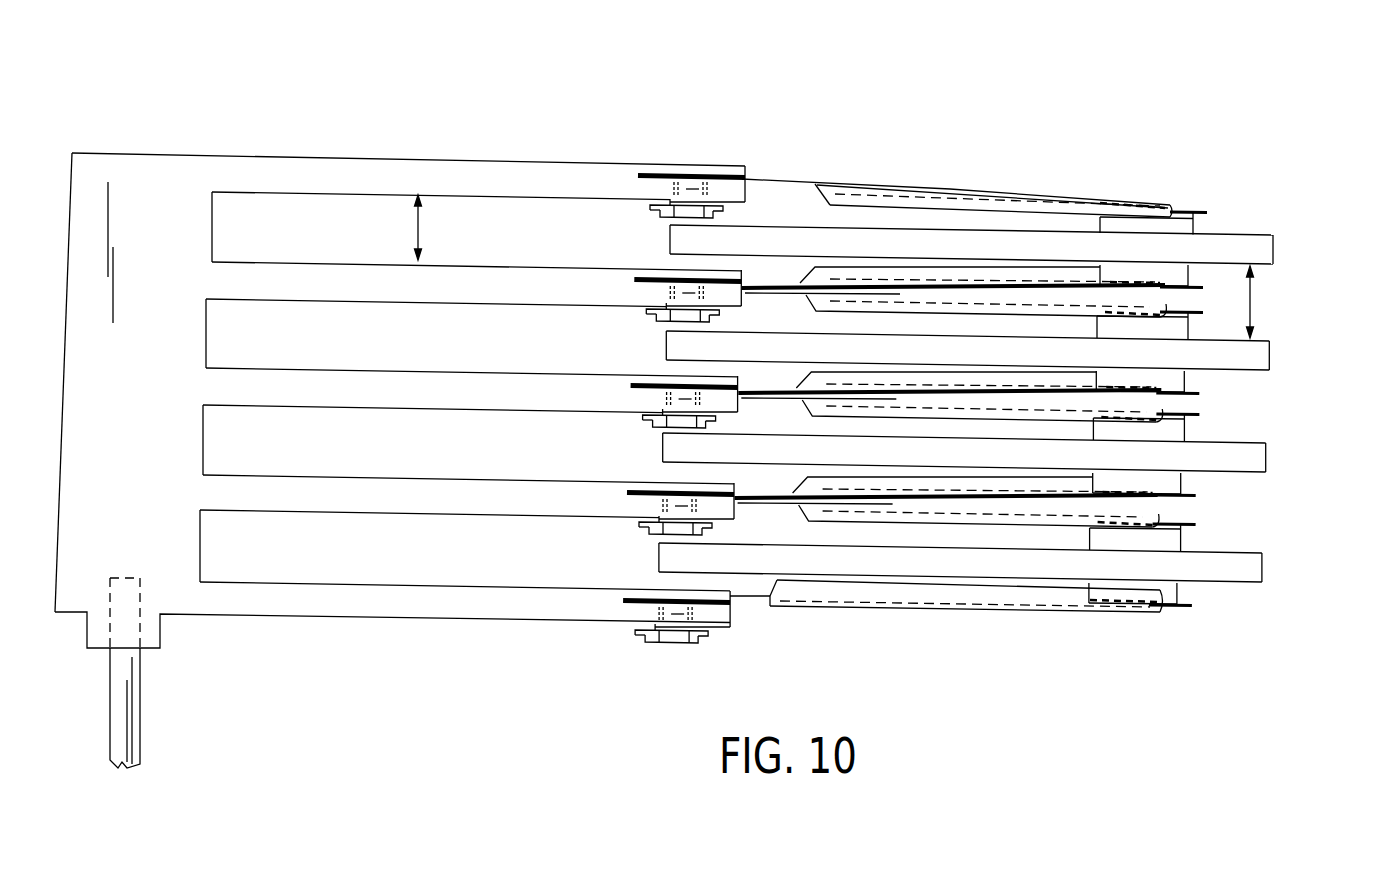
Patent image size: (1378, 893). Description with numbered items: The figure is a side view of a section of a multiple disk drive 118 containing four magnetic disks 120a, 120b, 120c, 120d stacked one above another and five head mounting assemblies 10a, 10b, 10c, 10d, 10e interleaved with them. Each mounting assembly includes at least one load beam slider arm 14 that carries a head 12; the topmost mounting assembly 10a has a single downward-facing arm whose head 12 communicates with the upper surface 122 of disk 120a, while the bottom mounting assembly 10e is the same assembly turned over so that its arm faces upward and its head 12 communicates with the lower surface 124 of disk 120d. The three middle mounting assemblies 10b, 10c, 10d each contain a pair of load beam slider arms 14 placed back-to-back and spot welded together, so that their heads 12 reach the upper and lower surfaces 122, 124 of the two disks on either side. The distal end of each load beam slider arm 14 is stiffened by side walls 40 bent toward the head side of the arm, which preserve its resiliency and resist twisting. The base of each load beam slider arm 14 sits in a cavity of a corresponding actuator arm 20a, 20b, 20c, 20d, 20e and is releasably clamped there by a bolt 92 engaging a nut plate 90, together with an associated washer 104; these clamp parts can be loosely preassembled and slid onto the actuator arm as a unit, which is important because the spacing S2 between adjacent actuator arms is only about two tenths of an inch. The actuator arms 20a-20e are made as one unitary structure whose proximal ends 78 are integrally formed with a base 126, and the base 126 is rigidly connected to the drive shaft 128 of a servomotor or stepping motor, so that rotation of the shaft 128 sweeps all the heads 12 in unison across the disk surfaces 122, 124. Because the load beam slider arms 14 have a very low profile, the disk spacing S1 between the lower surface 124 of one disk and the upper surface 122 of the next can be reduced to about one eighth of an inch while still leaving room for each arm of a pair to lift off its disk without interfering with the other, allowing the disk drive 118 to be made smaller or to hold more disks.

The multiple disk drive 118 is at (484, 68).
The base 126 is at (86, 152).
The proximal ends 78 is at (207, 134).
The drive shaft 128 is at (140, 708).
The actuator arm 20a is at (335, 140).
The actuator arm 20b is at (329, 249).
The actuator arm 20c is at (332, 354).
The actuator arm 20d is at (332, 454).
The actuator arm 20e is at (327, 569).
The spacing between adjacent actuator arms S2 is at (433, 227).
The disk spacing S1 is at (1262, 302).
The nut plate 90 is at (745, 168).
The mounting assembly 10a is at (624, 134).
The mounting assembly 10b is at (582, 249).
The mounting assembly 10c is at (573, 354).
The mounting assembly 10d is at (563, 458).
The mounting assembly 10e is at (574, 572).
The washer 104 is at (650, 207).
The bolt 92 is at (660, 214).
The side walls 40 is at (826, 192).
The load beam slider arm 14 is at (1118, 200).
The head 12 is at (1193, 229).
The magnetic disk 120a is at (1276, 250).
The magnetic disk 120b is at (1270, 355).
The magnetic disk 120c is at (1268, 463).
The magnetic disk 120d is at (1262, 572).
The upper surface 122 is at (1258, 236).
The lower surface 124 is at (1265, 266).